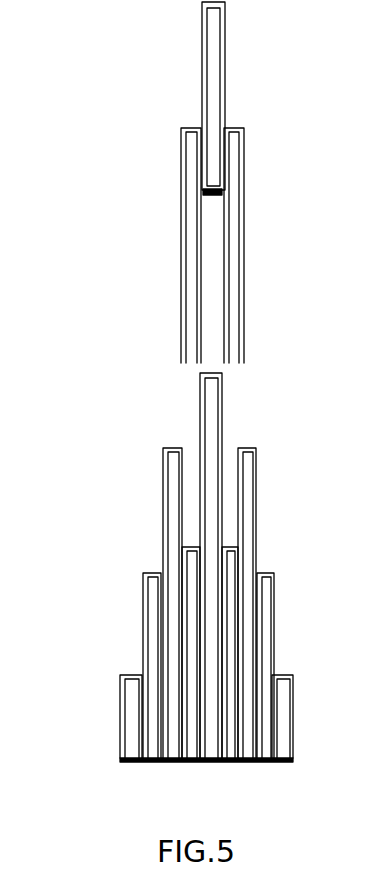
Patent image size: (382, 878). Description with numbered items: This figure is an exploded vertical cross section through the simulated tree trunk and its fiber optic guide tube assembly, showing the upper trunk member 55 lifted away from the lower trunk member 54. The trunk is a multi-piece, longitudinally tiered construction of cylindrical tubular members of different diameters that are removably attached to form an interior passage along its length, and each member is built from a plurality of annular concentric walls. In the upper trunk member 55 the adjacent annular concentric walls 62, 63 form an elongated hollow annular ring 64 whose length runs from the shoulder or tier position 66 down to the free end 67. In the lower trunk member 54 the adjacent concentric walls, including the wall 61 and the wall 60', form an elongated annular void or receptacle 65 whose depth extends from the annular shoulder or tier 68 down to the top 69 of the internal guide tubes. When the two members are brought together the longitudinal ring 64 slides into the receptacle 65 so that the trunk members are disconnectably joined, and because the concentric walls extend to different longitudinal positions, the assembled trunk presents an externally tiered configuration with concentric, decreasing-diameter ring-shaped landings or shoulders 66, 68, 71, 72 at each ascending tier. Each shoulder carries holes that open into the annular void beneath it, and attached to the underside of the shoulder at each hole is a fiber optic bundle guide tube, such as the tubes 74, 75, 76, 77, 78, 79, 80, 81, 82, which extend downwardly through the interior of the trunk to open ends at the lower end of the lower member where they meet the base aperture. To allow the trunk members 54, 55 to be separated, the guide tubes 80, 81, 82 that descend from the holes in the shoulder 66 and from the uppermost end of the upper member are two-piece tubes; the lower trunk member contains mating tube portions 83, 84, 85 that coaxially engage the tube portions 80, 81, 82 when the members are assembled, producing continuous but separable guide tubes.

The lower trunk member 54 is at (134, 514).
The upper trunk member 55 is at (138, 201).
The central plate 60' is at (255, 565).
The annular wall 61 is at (222, 403).
The annular concentric wall 62 is at (238, 303).
The annular concentric wall 63 is at (244, 260).
The elongated hollow annular ring 64 is at (246, 222).
The elongated annular void or receptacle 65 is at (234, 491).
The shoulder or tier position 66 is at (243, 128).
The free end 67 is at (244, 364).
The annular shoulder or tier 68 is at (252, 447).
The top of internal guide tubes 69 is at (232, 546).
The annular shoulder 71 is at (268, 573).
The annular shoulder 72 is at (283, 676).
The fiber optic bundle guide tube 74 is at (283, 760).
The fiber optic bundle guide tube 75 is at (260, 760).
The fiber optic bundle guide tube 76 is at (245, 760).
The fiber optic bundle guide tube 77 is at (164, 760).
The fiber optic bundle guide tube 78 is at (150, 760).
The fiber optic bundle guide tube 79 is at (132, 758).
The two-piece guide tube 80 is at (233, 366).
The two-piece guide tube 81 is at (190, 370).
The two-piece guide tube 82 is at (226, 192).
The tube portion 83 is at (228, 760).
The tube portion 84 is at (187, 760).
The tube portion 85 is at (200, 373).